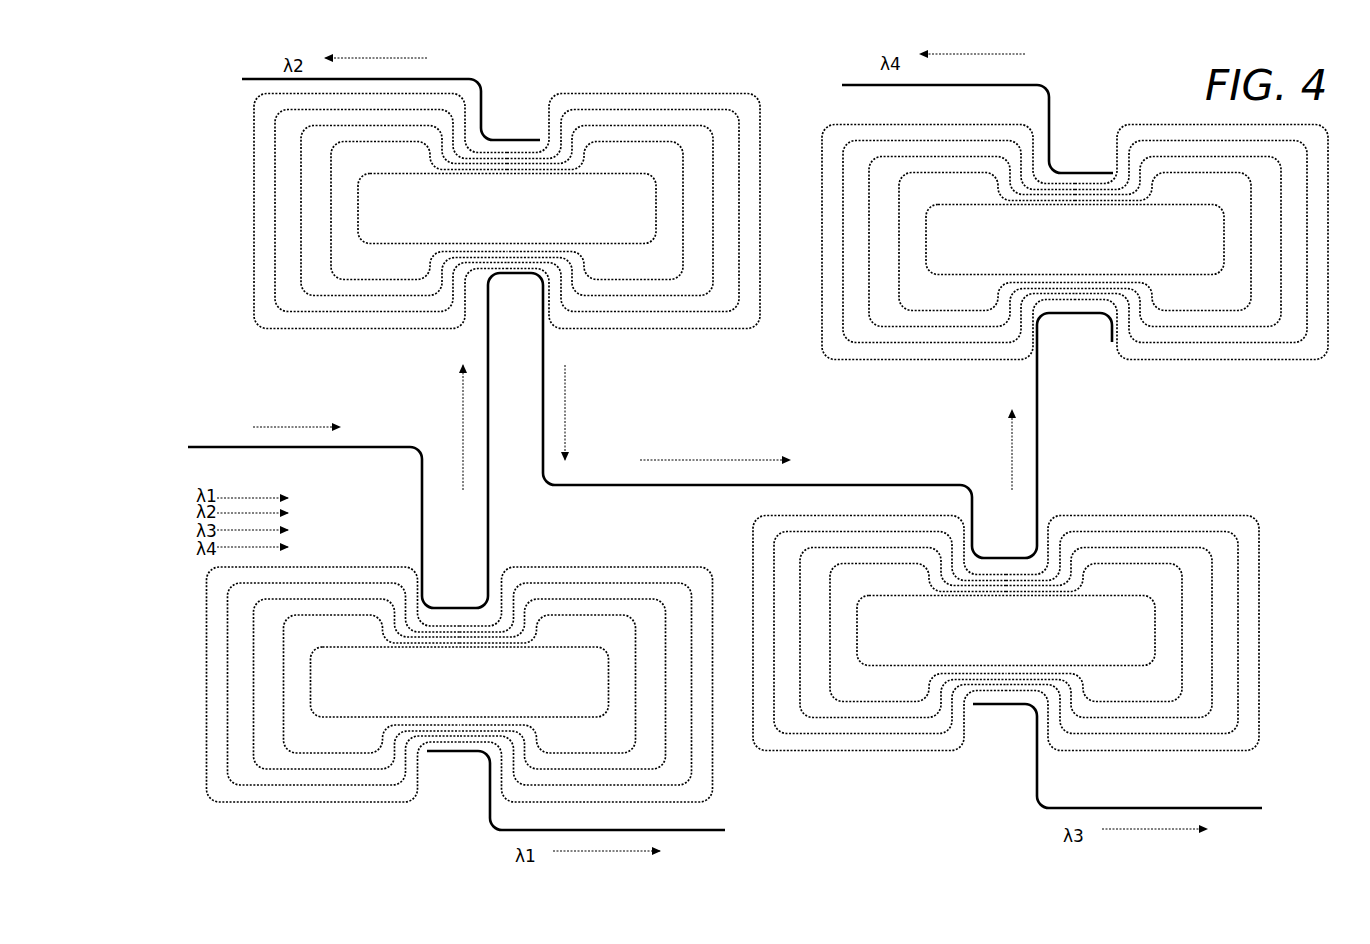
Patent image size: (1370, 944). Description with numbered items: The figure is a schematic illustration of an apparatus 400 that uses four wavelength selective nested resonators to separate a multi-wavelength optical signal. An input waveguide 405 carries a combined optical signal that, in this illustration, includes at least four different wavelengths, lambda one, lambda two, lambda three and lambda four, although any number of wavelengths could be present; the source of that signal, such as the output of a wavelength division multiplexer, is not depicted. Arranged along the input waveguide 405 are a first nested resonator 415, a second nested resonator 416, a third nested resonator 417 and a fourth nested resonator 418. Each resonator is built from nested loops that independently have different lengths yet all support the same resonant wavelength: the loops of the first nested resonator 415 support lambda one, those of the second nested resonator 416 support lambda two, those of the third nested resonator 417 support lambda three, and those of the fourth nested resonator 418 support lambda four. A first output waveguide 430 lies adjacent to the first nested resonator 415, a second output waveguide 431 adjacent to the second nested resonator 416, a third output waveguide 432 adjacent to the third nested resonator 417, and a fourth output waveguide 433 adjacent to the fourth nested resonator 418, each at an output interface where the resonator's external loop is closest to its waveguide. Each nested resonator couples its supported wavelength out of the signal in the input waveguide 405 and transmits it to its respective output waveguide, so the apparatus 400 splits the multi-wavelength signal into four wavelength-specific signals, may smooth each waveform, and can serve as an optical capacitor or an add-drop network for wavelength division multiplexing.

The apparatus 400 is at (1240, 436).
The input waveguide 405 is at (641, 440).
The first nested resonator 415 is at (460, 684).
The second nested resonator 416 is at (507, 211).
The third nested resonator 417 is at (1006, 633).
The fourth nested resonator 418 is at (1075, 242).
The first output waveguide 430 is at (581, 811).
The second output waveguide 431 is at (391, 95).
The third output waveguide 432 is at (1117, 757).
The fourth output waveguide 433 is at (977, 129).